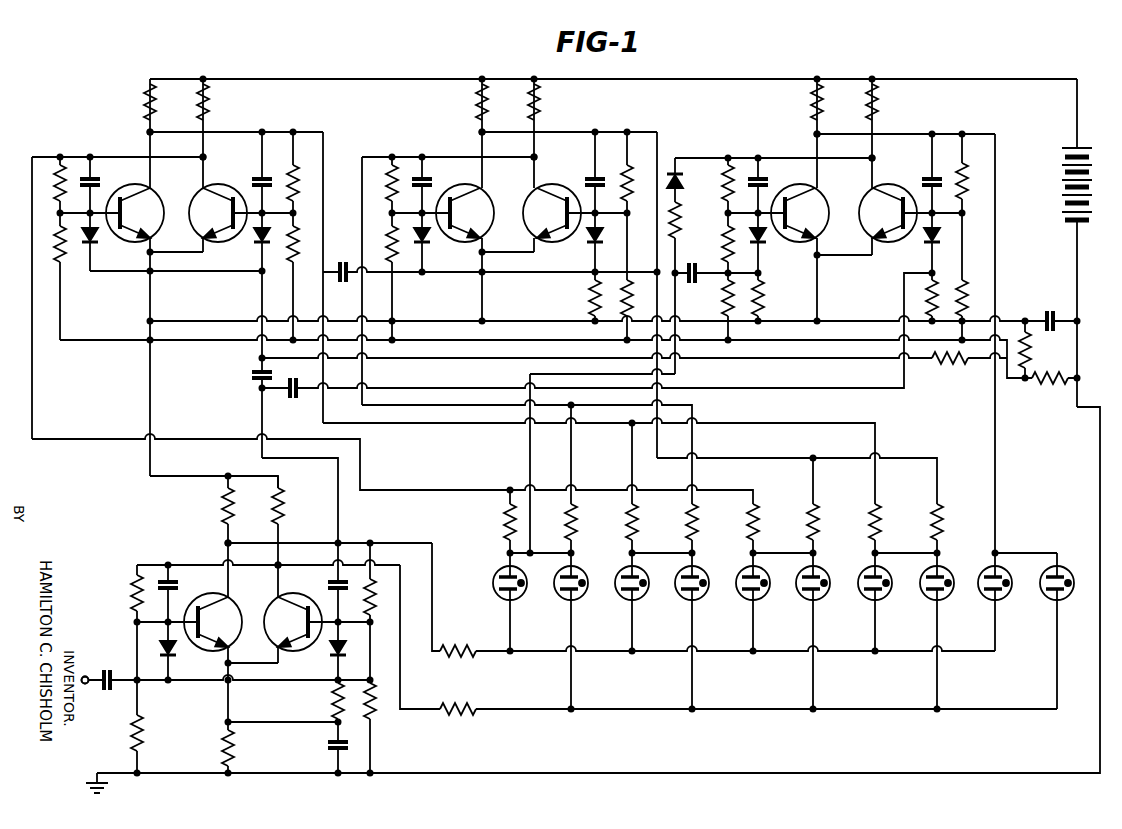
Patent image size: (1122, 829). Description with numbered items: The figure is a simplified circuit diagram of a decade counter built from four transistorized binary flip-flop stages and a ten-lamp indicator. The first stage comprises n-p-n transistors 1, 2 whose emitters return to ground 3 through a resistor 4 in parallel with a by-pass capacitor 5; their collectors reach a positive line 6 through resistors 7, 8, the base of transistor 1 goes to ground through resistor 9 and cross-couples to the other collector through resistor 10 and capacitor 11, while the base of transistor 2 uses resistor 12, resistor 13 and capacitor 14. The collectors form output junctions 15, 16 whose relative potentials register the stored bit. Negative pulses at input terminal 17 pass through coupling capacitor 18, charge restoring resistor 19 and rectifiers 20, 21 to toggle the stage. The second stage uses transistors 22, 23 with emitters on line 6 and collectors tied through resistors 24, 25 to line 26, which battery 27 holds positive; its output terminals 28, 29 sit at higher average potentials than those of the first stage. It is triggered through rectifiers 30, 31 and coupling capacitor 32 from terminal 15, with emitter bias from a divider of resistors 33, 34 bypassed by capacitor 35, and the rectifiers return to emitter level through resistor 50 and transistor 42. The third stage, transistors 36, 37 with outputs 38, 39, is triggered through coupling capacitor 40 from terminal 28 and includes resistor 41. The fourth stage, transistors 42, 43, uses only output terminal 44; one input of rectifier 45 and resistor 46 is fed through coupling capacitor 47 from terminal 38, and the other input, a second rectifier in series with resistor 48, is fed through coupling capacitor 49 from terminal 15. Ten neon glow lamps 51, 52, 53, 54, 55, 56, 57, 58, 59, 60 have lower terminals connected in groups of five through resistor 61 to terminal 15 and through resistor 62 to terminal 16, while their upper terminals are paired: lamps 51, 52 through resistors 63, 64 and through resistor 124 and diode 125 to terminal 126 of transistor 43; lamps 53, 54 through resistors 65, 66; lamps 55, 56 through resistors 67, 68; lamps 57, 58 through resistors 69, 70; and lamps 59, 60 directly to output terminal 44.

The transistor 1 is at (229, 608).
The transistor 2 is at (266, 617).
The ground 3 is at (184, 772).
The resistor 4 is at (220, 748).
The by-pass capacitor 5 is at (327, 747).
The line 6 is at (150, 392).
The resistor 7 is at (223, 508).
The resistor 8 is at (283, 505).
The resistor 9 is at (146, 731).
The resistor 10 is at (133, 594).
The capacitor 11 is at (173, 586).
The resistor 12 is at (375, 706).
The resistor 13 is at (372, 604).
The capacitor 14 is at (330, 585).
The circuit junction 15 is at (225, 543).
The circuit junction 16 is at (278, 565).
The input terminal 17 is at (87, 675).
The coupling capacitor 18 is at (105, 690).
The charge restoring resistor 19 is at (332, 703).
The crystal diode rectifier 20 is at (173, 650).
The crystal diode rectifier 21 is at (333, 646).
The transistor 22 is at (151, 194).
The transistor 23 is at (199, 196).
The resistor 24 is at (144, 102).
The resistor 25 is at (208, 100).
The line 26 is at (302, 78).
The battery 27 is at (1065, 146).
The output terminal 28 is at (148, 132).
The output terminal 29 is at (207, 157).
The rectifier 30 is at (95, 244).
The rectifier 31 is at (257, 244).
The coupling capacitor 32 is at (254, 376).
The resistor 33 is at (1031, 350).
The resistor 34 is at (1057, 385).
The by-pass capacitor 35 is at (1050, 312).
The transistor 36 is at (466, 186).
The transistor 37 is at (524, 194).
The output terminal 38 is at (480, 132).
The output terminal 39 is at (538, 157).
The coupling capacitor 40 is at (344, 261).
The resistor 41 is at (590, 298).
The transistor 42 is at (806, 186).
The transistor 43 is at (912, 188).
The output terminal 44 is at (816, 134).
The rectifier 45 is at (763, 248).
The resistor 46 is at (765, 298).
The coupling capacitor 47 is at (693, 265).
The resistor 48 is at (936, 288).
The coupling capacitor 49 is at (293, 381).
The resistor 50 is at (948, 365).
The neon glow lamp 51 is at (495, 598).
The neon glow lamp 52 is at (564, 599).
The neon glow lamp 53 is at (625, 599).
The neon glow lamp 54 is at (685, 599).
The neon glow lamp 55 is at (746, 599).
The neon glow lamp 56 is at (806, 599).
The neon glow lamp 57 is at (868, 599).
The neon glow lamp 58 is at (930, 599).
The neon glow lamp 59 is at (988, 599).
The neon glow lamp 60 is at (1050, 599).
The resistor 61 is at (476, 646).
The resistor 62 is at (449, 718).
The resistor 63 is at (502, 522).
The resistor 64 is at (562, 522).
The resistor 65 is at (623, 522).
The resistor 66 is at (683, 522).
The resistor 67 is at (744, 522).
The resistor 68 is at (804, 522).
The resistor 69 is at (866, 522).
The resistor 70 is at (928, 522).
The resistor 124 is at (682, 218).
The diode 125 is at (683, 181).
The terminal 126 is at (870, 170).